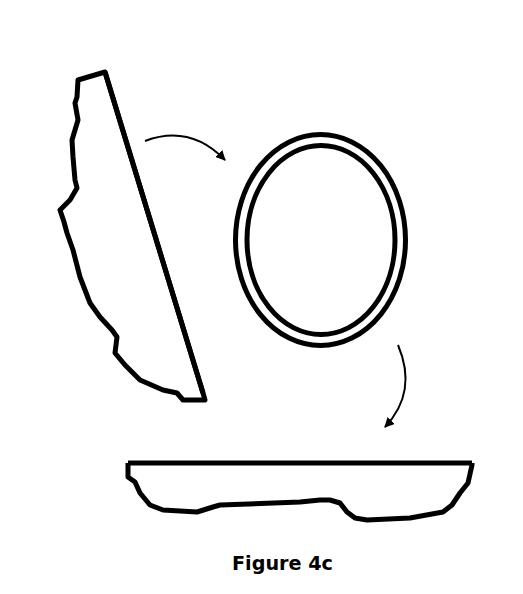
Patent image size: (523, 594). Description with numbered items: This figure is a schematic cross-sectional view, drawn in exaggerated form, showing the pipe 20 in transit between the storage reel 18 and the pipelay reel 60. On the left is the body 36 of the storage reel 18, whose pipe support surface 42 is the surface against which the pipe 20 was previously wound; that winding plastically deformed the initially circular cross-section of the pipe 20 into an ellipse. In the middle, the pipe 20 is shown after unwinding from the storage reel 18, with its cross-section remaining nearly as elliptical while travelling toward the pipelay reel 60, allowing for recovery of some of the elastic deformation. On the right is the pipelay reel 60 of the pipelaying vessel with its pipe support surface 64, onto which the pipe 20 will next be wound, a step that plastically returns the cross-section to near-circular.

The storage reel 18 is at (122, 222).
The pipe 20 is at (385, 180).
The body 36 is at (125, 254).
The pipe support surface 42 is at (120, 120).
The pipelay reel 60 is at (300, 455).
The pipe support surface 64 is at (315, 458).